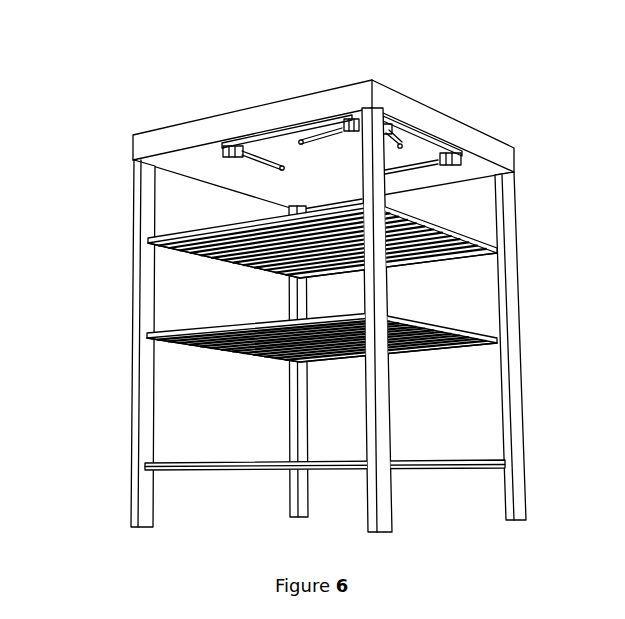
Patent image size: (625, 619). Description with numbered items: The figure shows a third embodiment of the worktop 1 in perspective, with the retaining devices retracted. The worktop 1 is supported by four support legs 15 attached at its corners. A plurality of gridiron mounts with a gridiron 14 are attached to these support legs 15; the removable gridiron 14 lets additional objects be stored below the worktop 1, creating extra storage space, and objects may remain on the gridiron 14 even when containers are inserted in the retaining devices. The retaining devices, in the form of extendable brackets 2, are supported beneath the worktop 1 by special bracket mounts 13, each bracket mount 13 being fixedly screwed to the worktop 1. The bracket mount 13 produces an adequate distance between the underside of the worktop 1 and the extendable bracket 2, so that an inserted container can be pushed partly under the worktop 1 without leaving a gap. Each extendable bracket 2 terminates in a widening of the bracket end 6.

The worktop 1 is at (157, 127).
The extendable bracket 2 is at (270, 133).
The widening of a bracket end 6 is at (302, 140).
The bracket mounting 13 is at (222, 146).
The gridiron mounting with gridiron 14 is at (196, 228).
The support leg 15 is at (128, 278).